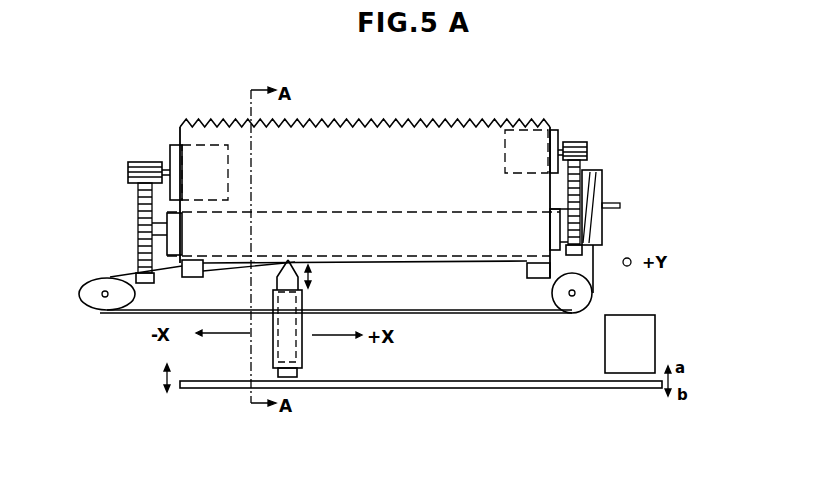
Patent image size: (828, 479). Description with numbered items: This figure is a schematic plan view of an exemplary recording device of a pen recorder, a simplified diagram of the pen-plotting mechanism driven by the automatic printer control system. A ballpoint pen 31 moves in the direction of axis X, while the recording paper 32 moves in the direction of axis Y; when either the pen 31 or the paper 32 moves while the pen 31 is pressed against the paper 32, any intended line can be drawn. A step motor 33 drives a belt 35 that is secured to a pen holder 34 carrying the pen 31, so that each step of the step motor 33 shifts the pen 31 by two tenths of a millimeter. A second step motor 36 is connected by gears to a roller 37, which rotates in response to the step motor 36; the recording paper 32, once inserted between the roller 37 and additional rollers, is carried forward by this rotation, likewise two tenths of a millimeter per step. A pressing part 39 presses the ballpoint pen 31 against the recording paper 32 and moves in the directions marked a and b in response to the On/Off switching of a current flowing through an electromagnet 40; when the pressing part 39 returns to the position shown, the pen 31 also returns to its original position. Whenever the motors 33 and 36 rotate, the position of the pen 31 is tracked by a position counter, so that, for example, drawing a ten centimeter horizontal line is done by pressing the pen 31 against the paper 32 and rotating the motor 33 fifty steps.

The ballpoint pen 31 is at (288, 280).
The recording paper 32 is at (405, 138).
The step motor 33 is at (558, 135).
The pen holder 34 is at (267, 353).
The belt 35 is at (485, 315).
The step motor 36 is at (180, 147).
The roller 37 is at (175, 223).
The pressing part 39 is at (403, 383).
The electromagnet 40 is at (645, 335).